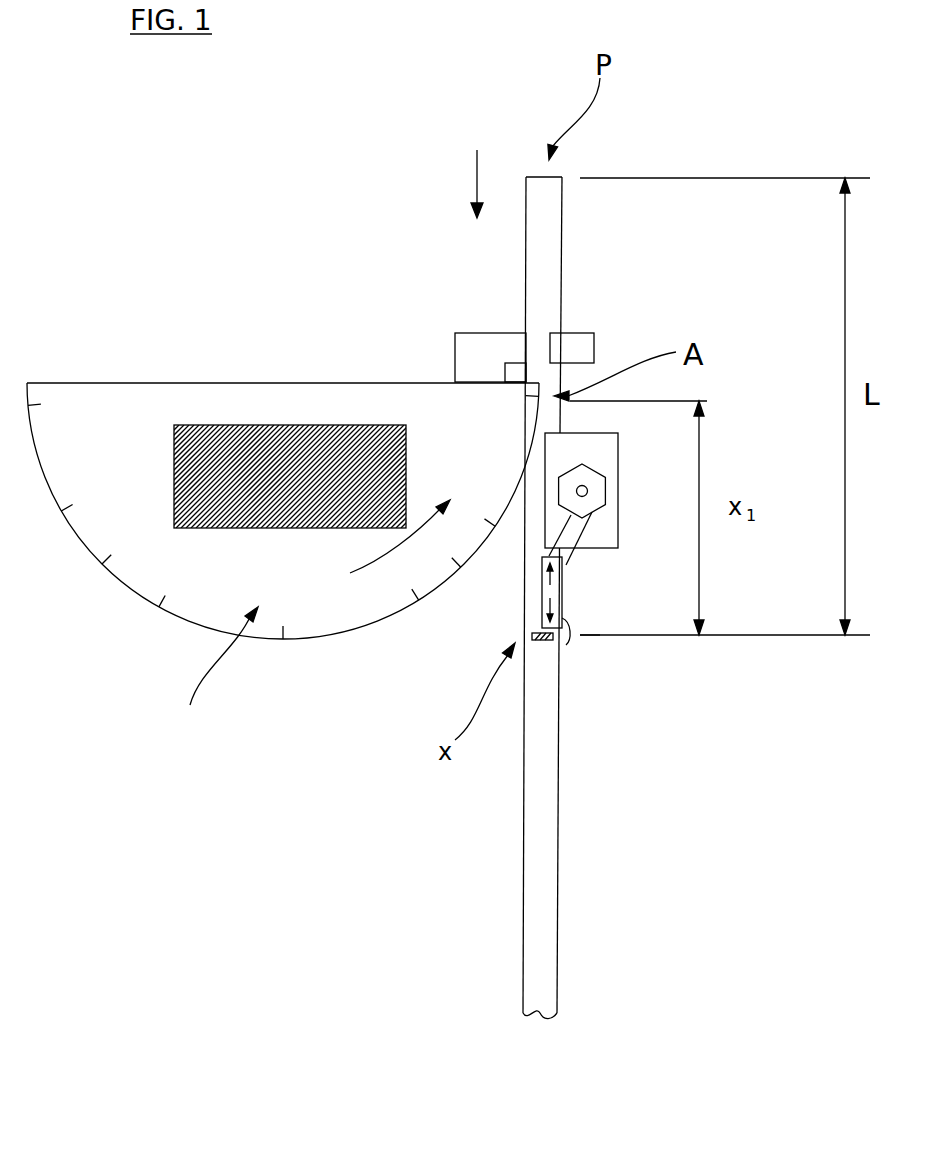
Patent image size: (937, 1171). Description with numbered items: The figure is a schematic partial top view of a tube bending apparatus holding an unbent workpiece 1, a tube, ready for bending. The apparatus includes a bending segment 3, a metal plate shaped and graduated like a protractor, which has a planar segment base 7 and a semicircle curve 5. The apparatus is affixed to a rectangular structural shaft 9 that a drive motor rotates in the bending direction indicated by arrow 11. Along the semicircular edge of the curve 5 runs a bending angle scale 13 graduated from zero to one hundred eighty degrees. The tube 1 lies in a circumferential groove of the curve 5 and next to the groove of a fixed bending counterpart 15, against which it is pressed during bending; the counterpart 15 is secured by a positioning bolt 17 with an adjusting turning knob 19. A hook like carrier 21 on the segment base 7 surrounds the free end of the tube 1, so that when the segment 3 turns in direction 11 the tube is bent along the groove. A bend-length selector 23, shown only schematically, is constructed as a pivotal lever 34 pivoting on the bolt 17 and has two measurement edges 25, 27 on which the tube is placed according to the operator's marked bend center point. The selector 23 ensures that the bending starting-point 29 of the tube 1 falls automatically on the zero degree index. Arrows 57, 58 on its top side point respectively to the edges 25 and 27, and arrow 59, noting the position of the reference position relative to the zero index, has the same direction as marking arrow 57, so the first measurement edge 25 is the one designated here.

The workpiece 1 is at (540, 895).
The bending segment 3 is at (283, 480).
The semicircle curve 5 is at (82, 542).
The segment base 7 is at (128, 380).
The rectangular structural shaft 9 is at (173, 463).
The bending direction arrow 11 is at (426, 523).
The bending angle scale 13 is at (210, 677).
The bending counterpart 15 is at (638, 571).
The positioning bolt 17 is at (588, 476).
The adjusting turning knob 19 is at (607, 488).
The hook like carrier 21 is at (474, 337).
The bend-length selector 23 is at (582, 553).
The first measurement edge 25 is at (563, 618).
The second measurement edge 27 is at (543, 553).
The bending starting-point 29 is at (586, 372).
The pivotal lever 34 is at (590, 558).
The marking arrow 57 is at (545, 616).
The marking arrow 58 is at (543, 576).
The arrow 59 is at (477, 180).